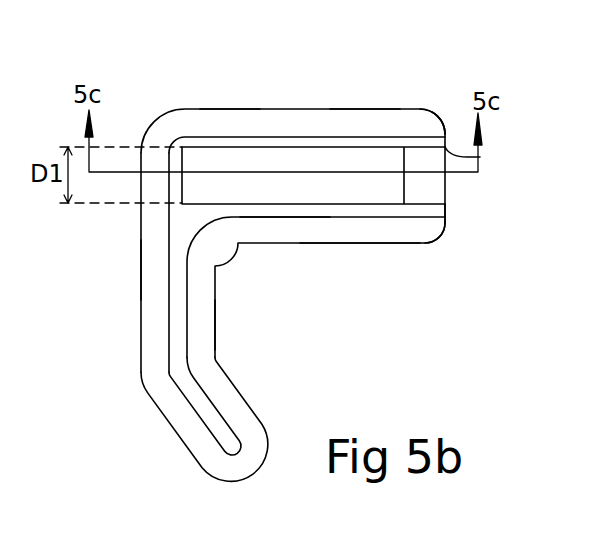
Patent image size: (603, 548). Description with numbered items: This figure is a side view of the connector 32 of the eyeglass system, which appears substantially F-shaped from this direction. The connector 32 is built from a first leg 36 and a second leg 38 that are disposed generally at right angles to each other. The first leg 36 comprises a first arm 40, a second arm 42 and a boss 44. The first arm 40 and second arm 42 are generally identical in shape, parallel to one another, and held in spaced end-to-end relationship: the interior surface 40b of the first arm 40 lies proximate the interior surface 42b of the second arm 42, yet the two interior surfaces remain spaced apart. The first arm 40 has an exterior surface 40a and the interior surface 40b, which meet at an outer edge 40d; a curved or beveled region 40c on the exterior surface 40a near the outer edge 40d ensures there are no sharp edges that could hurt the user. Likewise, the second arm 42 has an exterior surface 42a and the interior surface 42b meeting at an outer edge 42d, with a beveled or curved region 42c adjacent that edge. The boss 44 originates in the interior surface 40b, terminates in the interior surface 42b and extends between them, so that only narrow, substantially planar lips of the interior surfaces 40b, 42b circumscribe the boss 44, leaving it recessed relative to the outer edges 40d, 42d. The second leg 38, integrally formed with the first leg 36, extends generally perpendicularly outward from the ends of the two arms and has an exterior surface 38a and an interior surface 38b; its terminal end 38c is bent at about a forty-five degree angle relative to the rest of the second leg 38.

The connector 32 is at (314, 281).
The first leg 36 is at (357, 108).
The second leg 38 is at (140, 312).
The exterior surface 38a is at (138, 265).
The interior surface 38b is at (212, 338).
The terminal end 38c is at (202, 448).
The first arm 40 is at (273, 123).
The exterior surface 40a is at (237, 108).
The interior surface 40b is at (354, 150).
The curved or beveled region 40c is at (433, 120).
The outer edge 40d is at (480, 157).
The second arm 42 is at (283, 230).
The exterior surface 42a is at (358, 244).
The interior surface 42b is at (273, 204).
The beveled or curved region 42c is at (435, 238).
The outer edge 42d is at (445, 205).
The boss 44 is at (375, 192).